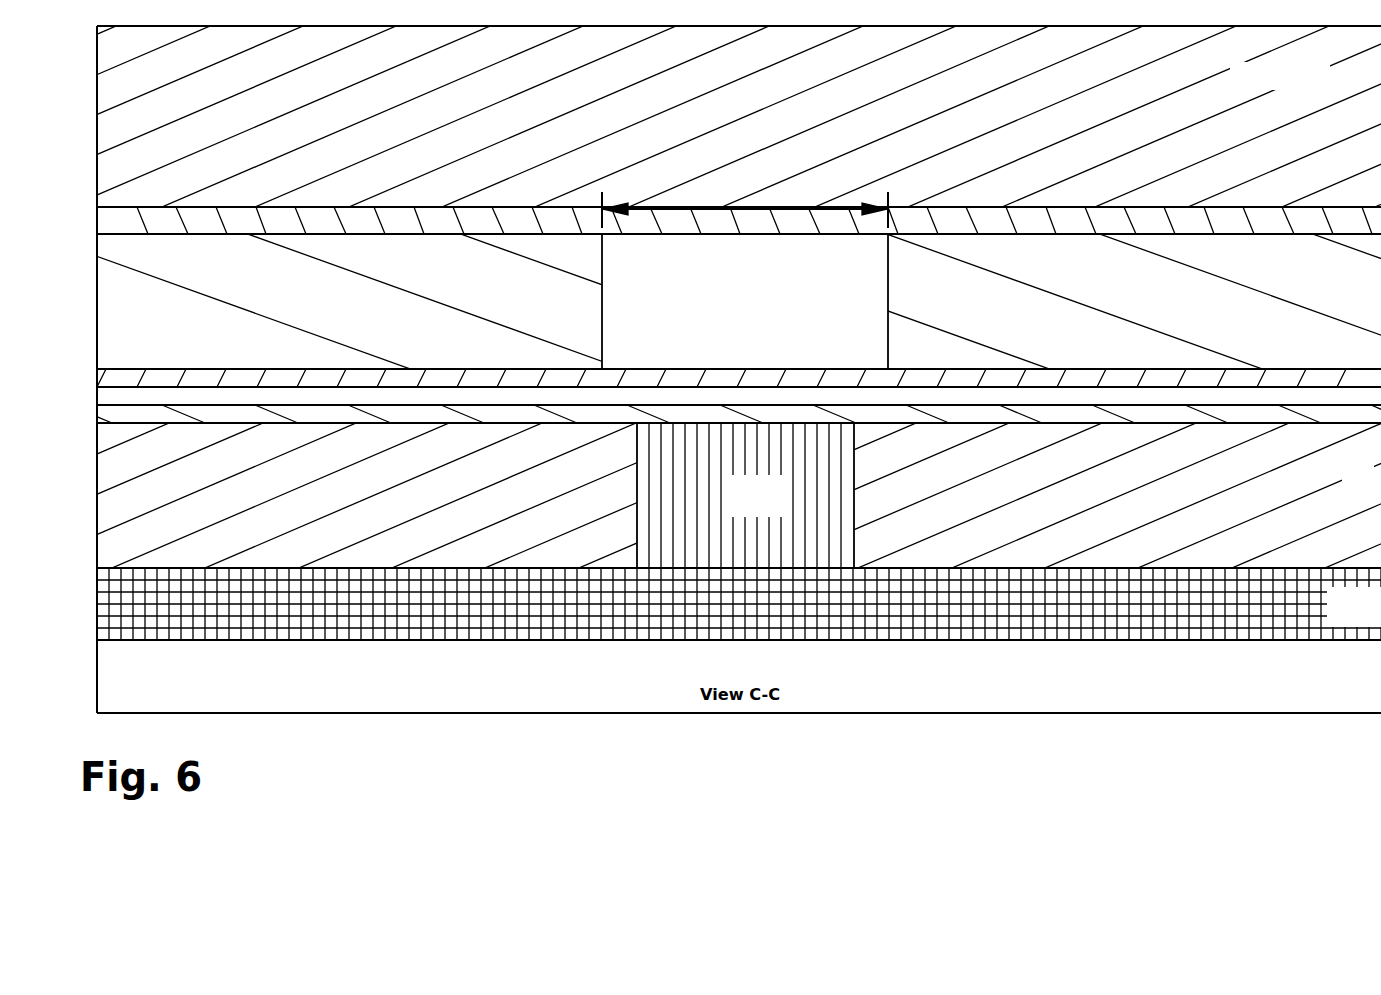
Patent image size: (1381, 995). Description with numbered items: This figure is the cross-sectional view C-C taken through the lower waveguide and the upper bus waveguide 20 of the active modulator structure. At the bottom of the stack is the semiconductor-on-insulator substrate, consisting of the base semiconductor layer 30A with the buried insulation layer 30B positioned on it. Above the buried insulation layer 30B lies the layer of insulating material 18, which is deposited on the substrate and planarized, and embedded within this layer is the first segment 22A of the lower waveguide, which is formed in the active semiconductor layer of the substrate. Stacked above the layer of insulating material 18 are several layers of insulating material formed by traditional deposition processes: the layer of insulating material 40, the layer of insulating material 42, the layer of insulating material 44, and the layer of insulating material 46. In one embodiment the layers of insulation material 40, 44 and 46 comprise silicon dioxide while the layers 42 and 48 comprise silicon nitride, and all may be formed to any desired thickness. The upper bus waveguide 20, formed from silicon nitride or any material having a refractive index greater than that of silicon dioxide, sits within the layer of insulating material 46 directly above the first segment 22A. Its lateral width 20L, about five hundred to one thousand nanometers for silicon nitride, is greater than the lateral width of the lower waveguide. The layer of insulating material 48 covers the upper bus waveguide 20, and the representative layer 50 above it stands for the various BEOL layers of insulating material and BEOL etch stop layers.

The representative BEOL layer 50 is at (690, 116).
The layer of insulating material 48 is at (110, 227).
The layer of insulating material 46 is at (699, 301).
The upper bus waveguide 20 is at (745, 301).
The lateral width of the upper bus waveguide 20L is at (718, 210).
The layer of insulating material 44 is at (113, 378).
The layer of insulating material 42 is at (105, 398).
The layer of insulating material 40 is at (110, 413).
The layer of insulating material 18 is at (690, 495).
The first segment of the lower waveguide 22A is at (745, 495).
The buried insulation layer 30B is at (739, 604).
The base semiconductor layer 30A is at (739, 676).